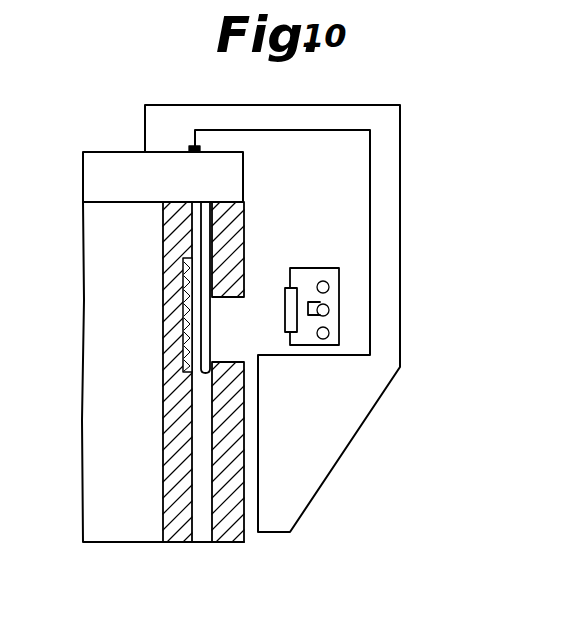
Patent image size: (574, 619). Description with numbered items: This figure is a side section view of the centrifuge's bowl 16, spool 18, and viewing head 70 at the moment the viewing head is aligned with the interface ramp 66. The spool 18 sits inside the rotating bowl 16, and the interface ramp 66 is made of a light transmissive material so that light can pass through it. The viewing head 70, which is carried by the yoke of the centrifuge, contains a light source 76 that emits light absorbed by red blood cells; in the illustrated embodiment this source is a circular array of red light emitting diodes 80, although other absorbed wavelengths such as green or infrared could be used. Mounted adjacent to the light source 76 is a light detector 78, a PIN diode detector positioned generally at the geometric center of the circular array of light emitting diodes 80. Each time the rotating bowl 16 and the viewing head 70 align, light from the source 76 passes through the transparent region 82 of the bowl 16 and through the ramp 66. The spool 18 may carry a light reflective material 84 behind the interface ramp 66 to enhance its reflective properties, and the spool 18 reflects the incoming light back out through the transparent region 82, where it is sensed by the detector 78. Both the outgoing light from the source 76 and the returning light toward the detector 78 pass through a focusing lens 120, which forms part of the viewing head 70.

The bowl 16 is at (228, 527).
The spool 18 is at (178, 205).
The interface ramp 66 is at (241, 273).
The viewing head 70 is at (380, 375).
The light source 76 is at (317, 275).
The light detector 78 is at (313, 318).
The red light emitting diodes 80 is at (329, 285).
The transparent region 82 is at (250, 330).
The light reflective material 84 is at (185, 293).
The focusing lens 120 is at (284, 331).